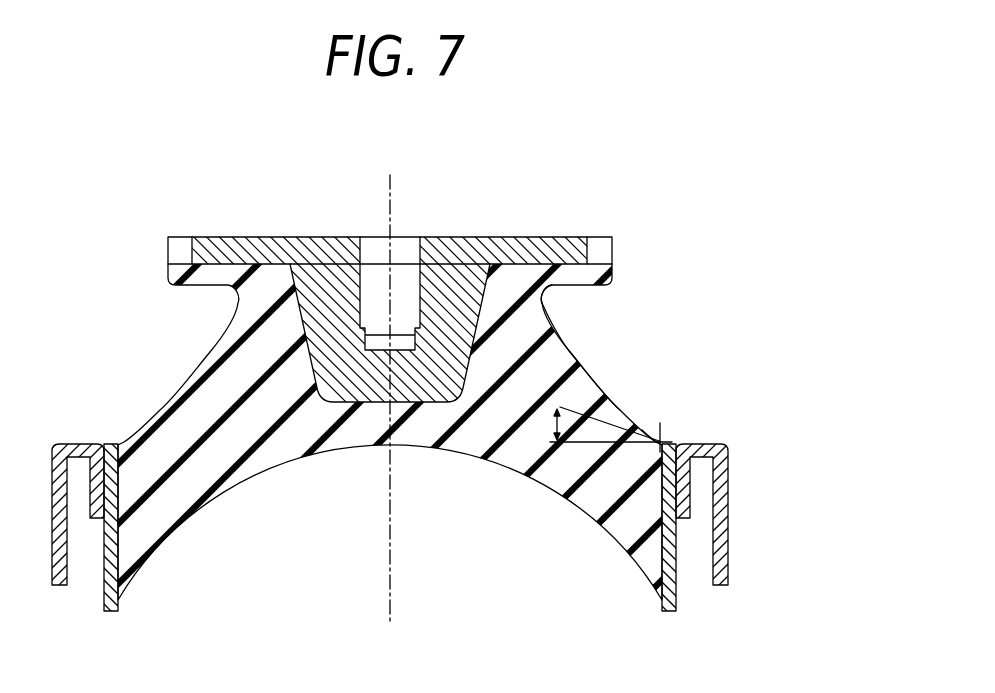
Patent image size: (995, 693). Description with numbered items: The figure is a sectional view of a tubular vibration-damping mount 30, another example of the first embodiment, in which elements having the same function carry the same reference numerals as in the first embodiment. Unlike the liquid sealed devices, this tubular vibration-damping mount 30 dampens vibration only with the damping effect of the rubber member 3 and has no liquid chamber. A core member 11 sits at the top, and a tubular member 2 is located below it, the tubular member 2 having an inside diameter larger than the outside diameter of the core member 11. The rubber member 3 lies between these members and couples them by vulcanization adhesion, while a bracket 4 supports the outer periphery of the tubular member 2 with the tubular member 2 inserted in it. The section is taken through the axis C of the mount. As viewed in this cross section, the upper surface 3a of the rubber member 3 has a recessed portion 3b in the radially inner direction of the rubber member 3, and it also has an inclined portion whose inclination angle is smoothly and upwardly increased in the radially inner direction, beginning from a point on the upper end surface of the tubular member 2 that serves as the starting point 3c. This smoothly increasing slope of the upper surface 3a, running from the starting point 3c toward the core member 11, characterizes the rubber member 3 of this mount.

The tubular vibration-damping mount 30 is at (497, 396).
The core member 11 is at (316, 267).
The rubber member 3 is at (203, 408).
The upper surface 3a is at (567, 347).
The recessed portion 3b is at (543, 293).
The starting point 3c is at (675, 443).
The tubular member 2 is at (668, 488).
The bracket 4 is at (728, 476).
The axis C is at (390, 197).